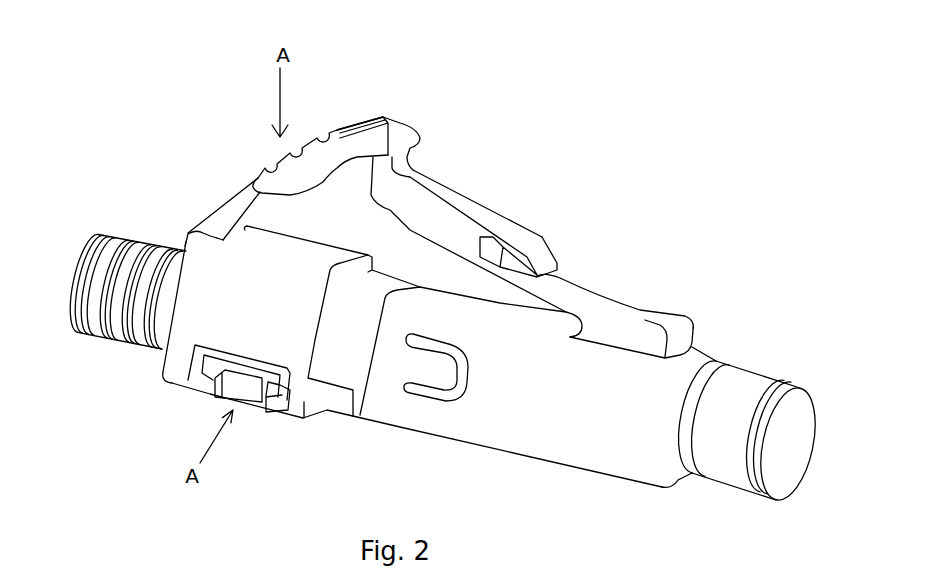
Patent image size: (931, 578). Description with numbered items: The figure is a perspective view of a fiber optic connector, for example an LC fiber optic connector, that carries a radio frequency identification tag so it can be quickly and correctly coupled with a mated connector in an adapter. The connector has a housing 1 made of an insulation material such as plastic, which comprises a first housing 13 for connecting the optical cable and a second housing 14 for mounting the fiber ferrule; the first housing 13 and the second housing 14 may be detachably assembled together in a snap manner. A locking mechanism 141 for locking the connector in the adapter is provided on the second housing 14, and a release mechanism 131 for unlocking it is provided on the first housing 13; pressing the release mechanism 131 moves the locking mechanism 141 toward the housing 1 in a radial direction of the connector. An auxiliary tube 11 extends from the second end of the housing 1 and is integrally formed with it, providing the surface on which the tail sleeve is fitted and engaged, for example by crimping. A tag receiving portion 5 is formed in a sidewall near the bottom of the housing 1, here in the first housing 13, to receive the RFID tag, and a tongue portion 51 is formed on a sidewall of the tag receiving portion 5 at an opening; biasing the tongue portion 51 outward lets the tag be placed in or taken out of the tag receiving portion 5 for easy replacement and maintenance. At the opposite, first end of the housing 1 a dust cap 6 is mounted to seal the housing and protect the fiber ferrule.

The housing 1 is at (600, 430).
The auxiliary tube 11 is at (120, 240).
The first housing 13 is at (195, 317).
The release mechanism 131 is at (293, 177).
The second housing 14 is at (413, 410).
The locking mechanism 141 is at (446, 208).
The tag receiving portion 5 is at (277, 381).
The tongue portion 51 is at (247, 390).
The dust cap 6 is at (738, 393).